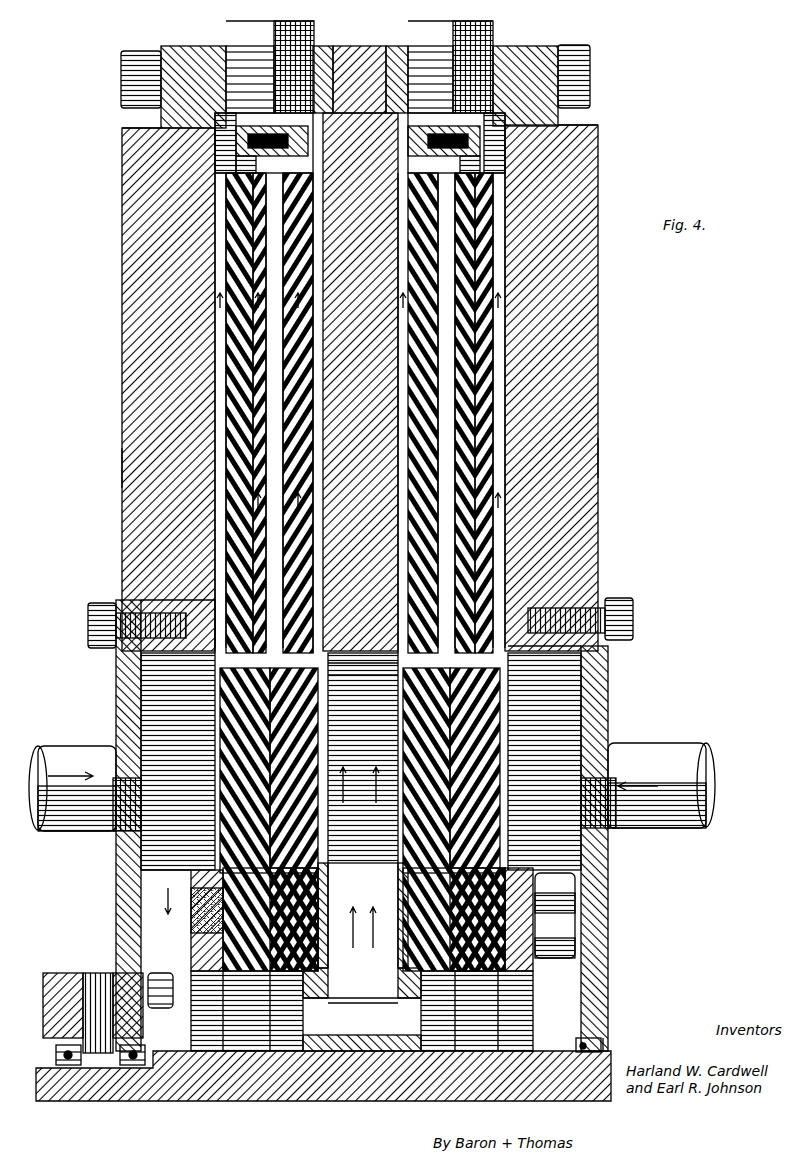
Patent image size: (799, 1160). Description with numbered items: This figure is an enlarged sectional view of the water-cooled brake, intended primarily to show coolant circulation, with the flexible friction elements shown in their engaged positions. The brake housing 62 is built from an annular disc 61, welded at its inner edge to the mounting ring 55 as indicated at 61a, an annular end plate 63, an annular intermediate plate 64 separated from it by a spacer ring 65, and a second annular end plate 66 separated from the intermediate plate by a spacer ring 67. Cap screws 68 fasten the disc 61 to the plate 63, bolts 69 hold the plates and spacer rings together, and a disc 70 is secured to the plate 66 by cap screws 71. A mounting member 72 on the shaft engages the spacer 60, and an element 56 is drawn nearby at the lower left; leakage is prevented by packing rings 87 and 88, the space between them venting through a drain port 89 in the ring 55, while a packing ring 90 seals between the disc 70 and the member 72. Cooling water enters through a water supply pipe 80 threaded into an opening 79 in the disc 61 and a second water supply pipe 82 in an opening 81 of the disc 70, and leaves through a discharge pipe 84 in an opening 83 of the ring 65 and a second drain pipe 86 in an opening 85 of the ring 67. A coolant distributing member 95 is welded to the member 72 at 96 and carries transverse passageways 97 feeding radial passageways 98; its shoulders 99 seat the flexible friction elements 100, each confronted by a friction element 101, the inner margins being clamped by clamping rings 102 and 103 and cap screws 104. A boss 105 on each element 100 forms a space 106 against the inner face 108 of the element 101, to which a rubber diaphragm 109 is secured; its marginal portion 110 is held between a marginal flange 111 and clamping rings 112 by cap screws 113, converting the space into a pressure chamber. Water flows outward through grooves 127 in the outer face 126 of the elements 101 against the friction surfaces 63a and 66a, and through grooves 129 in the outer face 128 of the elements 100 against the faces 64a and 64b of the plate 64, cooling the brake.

The mounting ring 55 is at (40, 968).
The ring 56 is at (150, 965).
The spacer 60 is at (85, 1093).
The annular disc 61 is at (108, 672).
The weld 61a is at (108, 950).
The brake housing 62 is at (150, 389).
The annular end plate 63 is at (114, 322).
The friction surface 63a is at (114, 458).
The annular intermediate plate 64 is at (352, 38).
The friction surface 64a is at (363, 674).
The friction surface 64b is at (363, 666).
The spacer ring 65 is at (315, 38).
The annular end plate 66 is at (590, 408).
The friction surface 66a is at (590, 448).
The spacer ring 67 is at (388, 38).
The cap screws 68 is at (90, 597).
The bolts 69 is at (582, 60).
The disc 70 is at (600, 694).
The cap screws 71 is at (625, 608).
The mounting member 72 is at (603, 1045).
The threaded opening 79 is at (85, 783).
The water supply pipe 80 is at (70, 815).
The opening 81 is at (651, 770).
The second water supply pipe 82 is at (680, 740).
The threaded opening 83 is at (215, 45).
The discharge pipe 84 is at (228, 30).
The opening 85 is at (505, 38).
The second discharge or drain pipe 86 is at (470, 25).
The packing ring 87 is at (135, 1042).
The packing ring 88 is at (48, 1047).
The drain port 89 is at (80, 965).
The packing ring 90 is at (593, 1032).
The coolant distributing member 95 is at (362, 997).
The welding 96 is at (300, 1038).
The transverse passageways 97 is at (362, 1022).
The radial passageway 98 is at (363, 911).
The shoulders 99 is at (362, 1010).
The flexible friction element 100 is at (369, 713).
The friction element 101 is at (361, 761).
The clamping ring 102 is at (512, 862).
The clamping ring 103 is at (183, 865).
The cap screws 104 is at (567, 893).
The boss 105 is at (255, 838).
The space 106 is at (255, 780).
The inner face 108 is at (455, 745).
The diaphragm 109 is at (212, 540).
The marginal portion 110 is at (364, 169).
The marginal flange 111 is at (364, 410).
The clamping rings 112 is at (362, 143).
The cap screws 113 is at (210, 128).
The outer face 126 is at (364, 766).
The radial grooves 127 is at (215, 405).
The outer face 128 is at (359, 770).
The radial grooves 129 is at (290, 215).